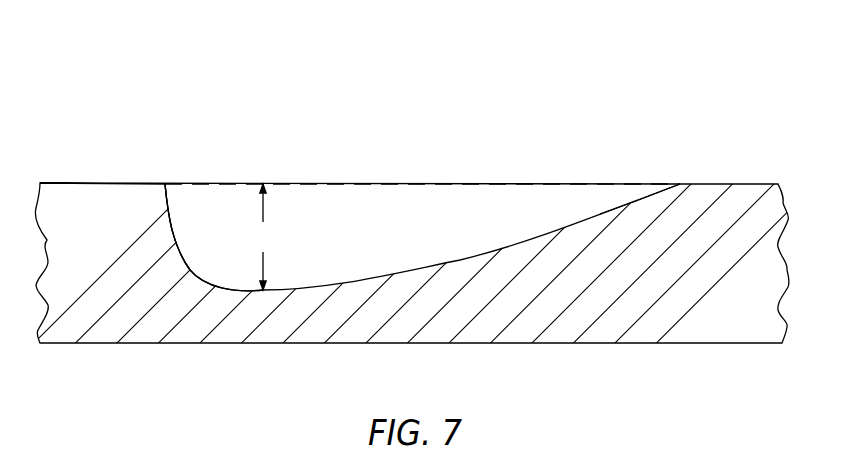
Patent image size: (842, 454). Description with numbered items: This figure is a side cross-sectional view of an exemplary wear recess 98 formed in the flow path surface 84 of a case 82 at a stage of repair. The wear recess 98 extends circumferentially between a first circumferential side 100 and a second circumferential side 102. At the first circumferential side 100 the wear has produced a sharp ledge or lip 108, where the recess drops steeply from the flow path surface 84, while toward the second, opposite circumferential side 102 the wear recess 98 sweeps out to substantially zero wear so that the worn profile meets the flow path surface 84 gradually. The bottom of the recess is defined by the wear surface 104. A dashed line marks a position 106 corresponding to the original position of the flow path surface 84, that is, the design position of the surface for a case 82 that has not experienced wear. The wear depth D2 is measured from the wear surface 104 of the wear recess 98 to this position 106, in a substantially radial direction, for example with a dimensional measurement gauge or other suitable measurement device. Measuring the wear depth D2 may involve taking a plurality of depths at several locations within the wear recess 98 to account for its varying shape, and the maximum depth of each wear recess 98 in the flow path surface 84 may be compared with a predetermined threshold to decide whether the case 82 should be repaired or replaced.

The case 82 is at (267, 105).
The flow path surface 84 is at (742, 184).
The wear recess 98 is at (438, 155).
The first circumferential side 100 is at (162, 170).
The second circumferential side 102 is at (668, 177).
The wear surface 104 is at (415, 269).
The position corresponding to original position of flow path surface 106 is at (360, 184).
The lip 108 is at (162, 230).
The wear depth D2 is at (262, 237).